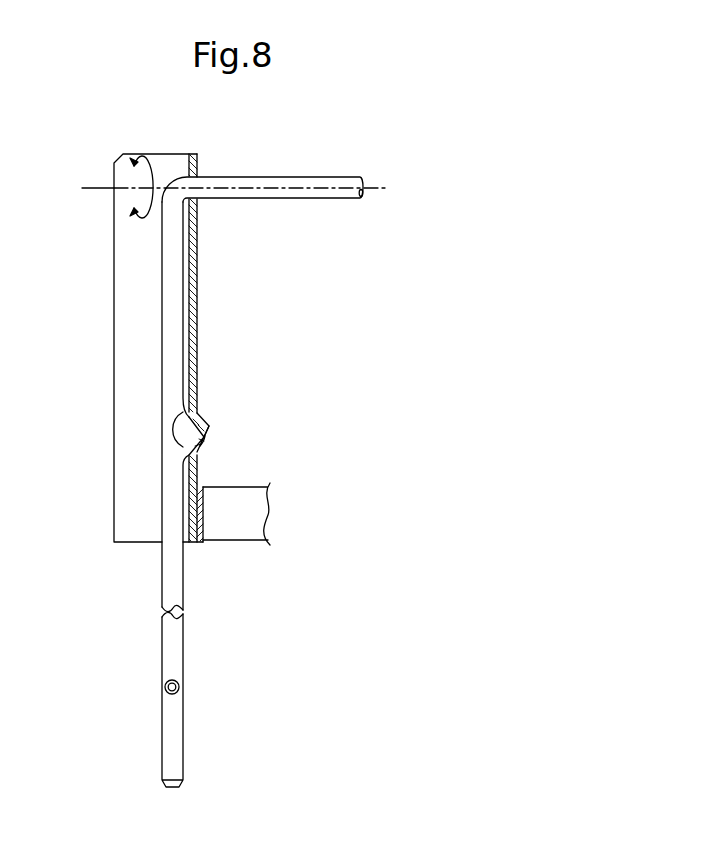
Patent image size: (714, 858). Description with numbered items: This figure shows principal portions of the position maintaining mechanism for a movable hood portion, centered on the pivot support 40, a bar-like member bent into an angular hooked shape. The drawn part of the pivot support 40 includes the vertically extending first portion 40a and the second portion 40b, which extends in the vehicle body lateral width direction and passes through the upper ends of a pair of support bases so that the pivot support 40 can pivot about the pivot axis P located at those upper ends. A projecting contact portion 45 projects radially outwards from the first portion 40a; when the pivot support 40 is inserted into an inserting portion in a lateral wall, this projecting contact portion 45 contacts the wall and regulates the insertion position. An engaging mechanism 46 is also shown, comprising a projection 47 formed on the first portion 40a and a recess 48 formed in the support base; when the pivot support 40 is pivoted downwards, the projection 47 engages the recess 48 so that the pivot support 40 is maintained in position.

The pivot support 40 is at (211, 451).
The first portion 40a is at (162, 294).
The second portion 40b is at (289, 183).
The projecting contact portion 45 is at (164, 687).
The engaging mechanism 46 is at (205, 413).
The projection 47 is at (187, 432).
The recess 48 is at (207, 427).
The pivot axis P is at (223, 189).